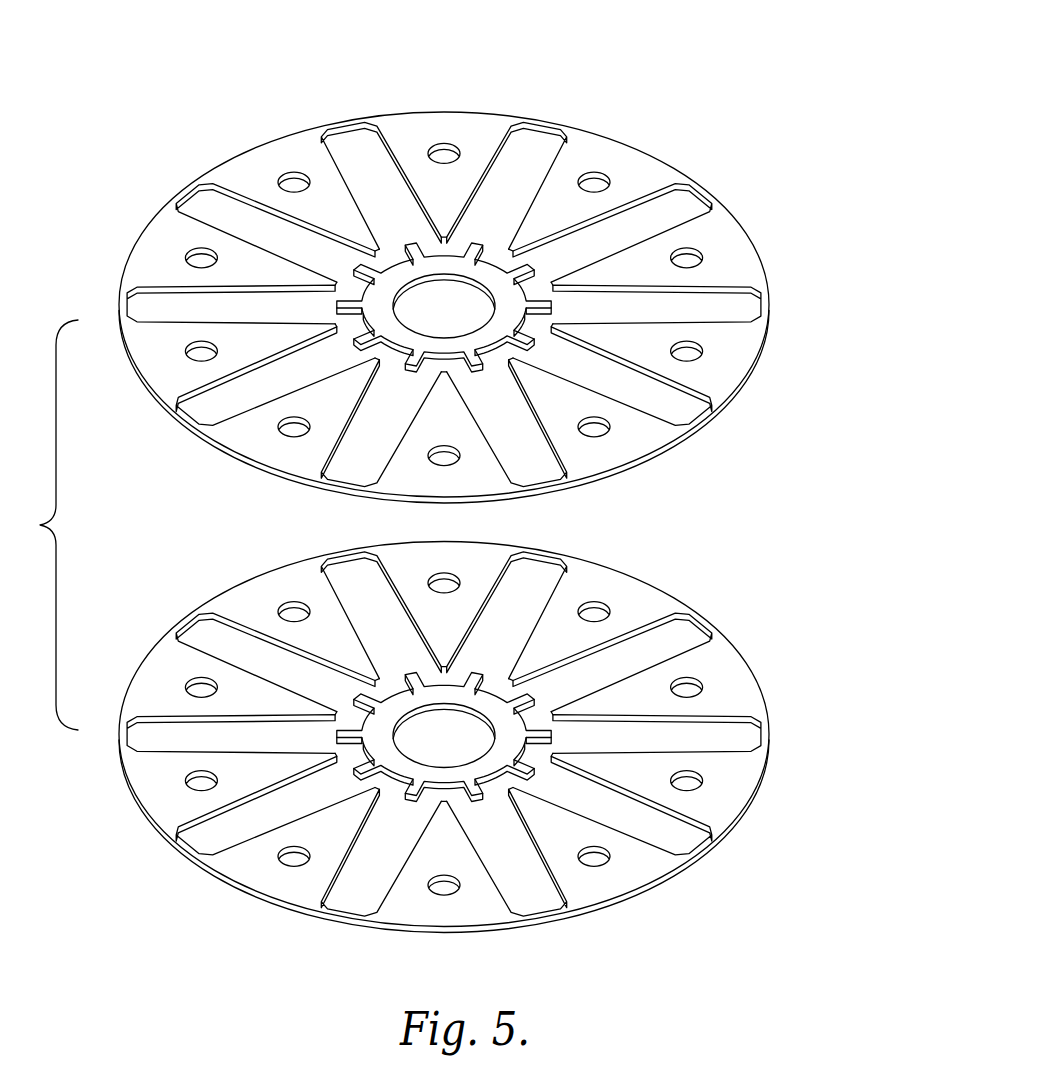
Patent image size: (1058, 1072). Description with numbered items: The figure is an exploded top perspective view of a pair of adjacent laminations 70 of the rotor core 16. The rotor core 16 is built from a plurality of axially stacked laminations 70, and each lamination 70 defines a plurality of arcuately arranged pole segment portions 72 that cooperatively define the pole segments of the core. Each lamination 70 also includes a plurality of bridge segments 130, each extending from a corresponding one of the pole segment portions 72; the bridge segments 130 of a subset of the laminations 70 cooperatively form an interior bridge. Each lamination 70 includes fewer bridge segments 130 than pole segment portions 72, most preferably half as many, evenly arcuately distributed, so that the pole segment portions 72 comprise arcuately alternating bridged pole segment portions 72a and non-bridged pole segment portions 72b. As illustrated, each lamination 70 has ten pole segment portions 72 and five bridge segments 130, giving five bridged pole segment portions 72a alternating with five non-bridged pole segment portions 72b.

The rotor core 16 is at (683, 76).
The lamination 70 is at (735, 180).
The pole segment portion 72 is at (443, 519).
The bridged pole segment portion 72a is at (258, 160).
The non-bridged pole segment portion 72b is at (478, 130).
The bridge segment 130 is at (386, 255).